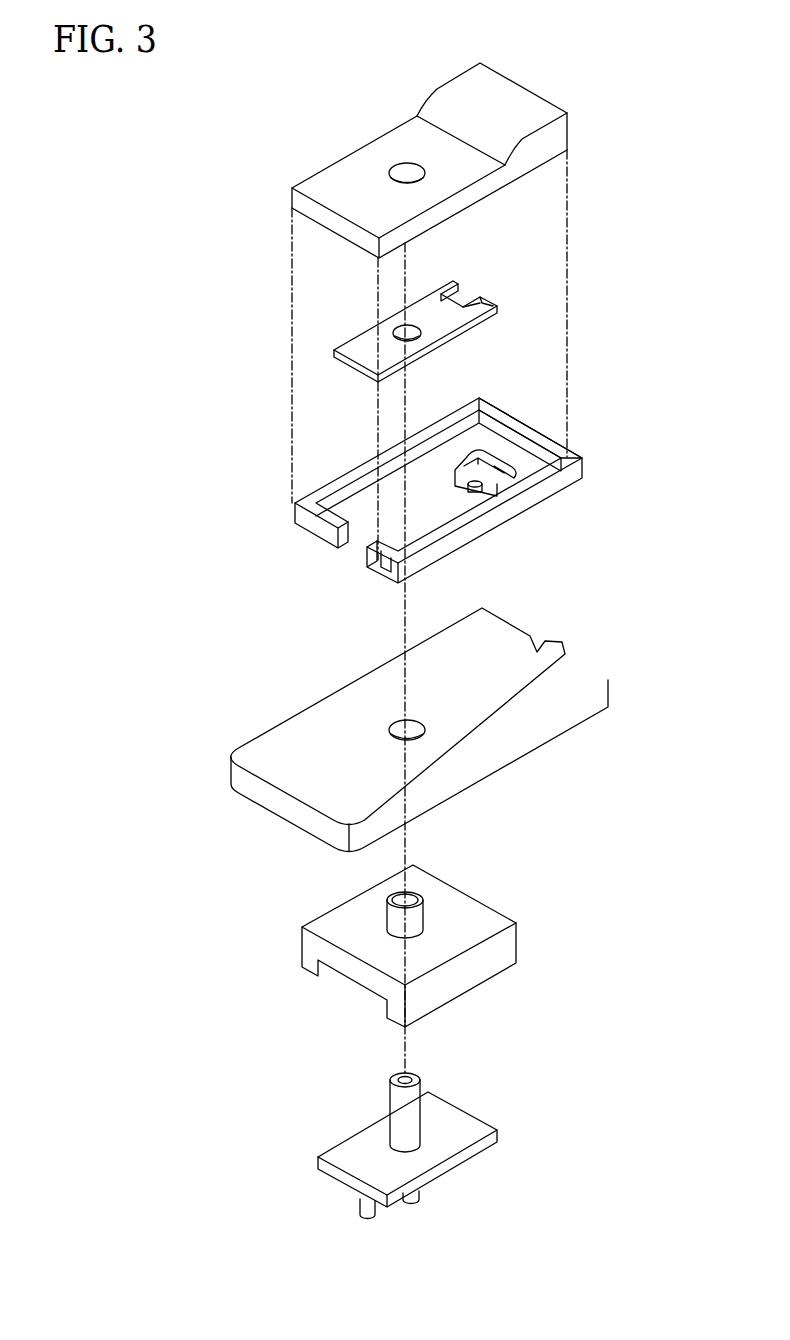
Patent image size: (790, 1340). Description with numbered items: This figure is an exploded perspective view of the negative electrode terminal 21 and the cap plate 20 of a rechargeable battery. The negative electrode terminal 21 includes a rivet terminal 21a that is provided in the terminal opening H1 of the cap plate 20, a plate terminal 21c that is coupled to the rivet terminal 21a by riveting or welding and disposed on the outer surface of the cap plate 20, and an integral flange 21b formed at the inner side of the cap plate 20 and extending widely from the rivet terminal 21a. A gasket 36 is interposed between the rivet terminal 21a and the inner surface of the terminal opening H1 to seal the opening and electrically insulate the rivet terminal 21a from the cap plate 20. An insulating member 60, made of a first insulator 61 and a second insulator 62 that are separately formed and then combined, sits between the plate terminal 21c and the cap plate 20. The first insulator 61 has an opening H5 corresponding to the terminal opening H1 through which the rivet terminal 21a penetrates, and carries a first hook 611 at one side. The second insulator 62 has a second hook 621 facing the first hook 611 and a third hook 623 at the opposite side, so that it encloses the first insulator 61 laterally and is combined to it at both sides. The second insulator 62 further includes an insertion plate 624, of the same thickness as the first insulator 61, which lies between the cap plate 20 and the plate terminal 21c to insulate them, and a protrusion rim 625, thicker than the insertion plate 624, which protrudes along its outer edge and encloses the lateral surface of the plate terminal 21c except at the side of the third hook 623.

The cap plate 20 is at (426, 730).
The negative electrode terminal 21 is at (393, 1143).
The rivet terminal 21a is at (398, 1098).
The flange 21b is at (463, 1125).
The plate terminal 21c is at (342, 172).
The gasket 36 is at (415, 920).
The insulating member 60 is at (160, 410).
The first insulator 61 is at (392, 314).
The first hook 611 is at (487, 303).
The second insulator 62 is at (482, 492).
The second hook 621 is at (474, 492).
The third hook 623 is at (368, 548).
The insertion plate 624 is at (505, 447).
The protrusion rim 625 is at (547, 437).
The terminal opening H1 is at (388, 729).
The opening H5 is at (412, 337).